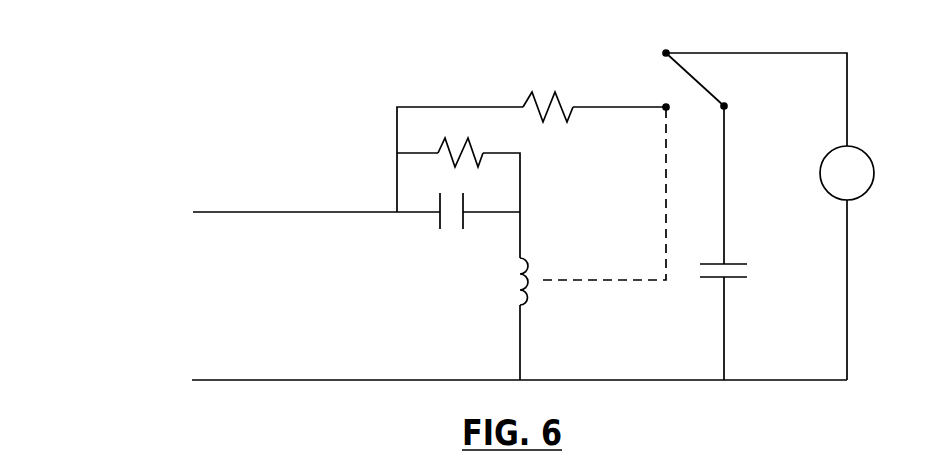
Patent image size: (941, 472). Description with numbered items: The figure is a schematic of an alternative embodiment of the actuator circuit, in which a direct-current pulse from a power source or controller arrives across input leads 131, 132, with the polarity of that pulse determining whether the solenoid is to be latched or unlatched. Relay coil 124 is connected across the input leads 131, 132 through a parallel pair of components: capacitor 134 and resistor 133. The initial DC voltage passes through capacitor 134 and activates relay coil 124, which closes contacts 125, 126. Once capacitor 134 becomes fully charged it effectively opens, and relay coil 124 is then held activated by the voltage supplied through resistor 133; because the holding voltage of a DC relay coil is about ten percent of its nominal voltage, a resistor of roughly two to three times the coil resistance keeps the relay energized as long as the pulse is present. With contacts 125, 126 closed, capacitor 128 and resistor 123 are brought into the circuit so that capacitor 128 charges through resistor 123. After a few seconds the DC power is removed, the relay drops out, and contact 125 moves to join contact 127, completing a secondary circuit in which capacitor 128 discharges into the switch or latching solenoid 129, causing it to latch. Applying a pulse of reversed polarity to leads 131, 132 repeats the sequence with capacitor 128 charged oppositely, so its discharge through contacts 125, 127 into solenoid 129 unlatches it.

The resistor 123 is at (548, 94).
The relay coil 124 is at (510, 281).
The relay contact 125 is at (742, 180).
The relay contact 126 is at (662, 92).
The relay contact 127 is at (686, 65).
The capacitor 128 is at (730, 307).
The latching solenoid 129 is at (858, 166).
The input lead 131 is at (501, 379).
The input lead 132 is at (298, 213).
The resistor 133 is at (460, 138).
The capacitor 134 is at (449, 229).